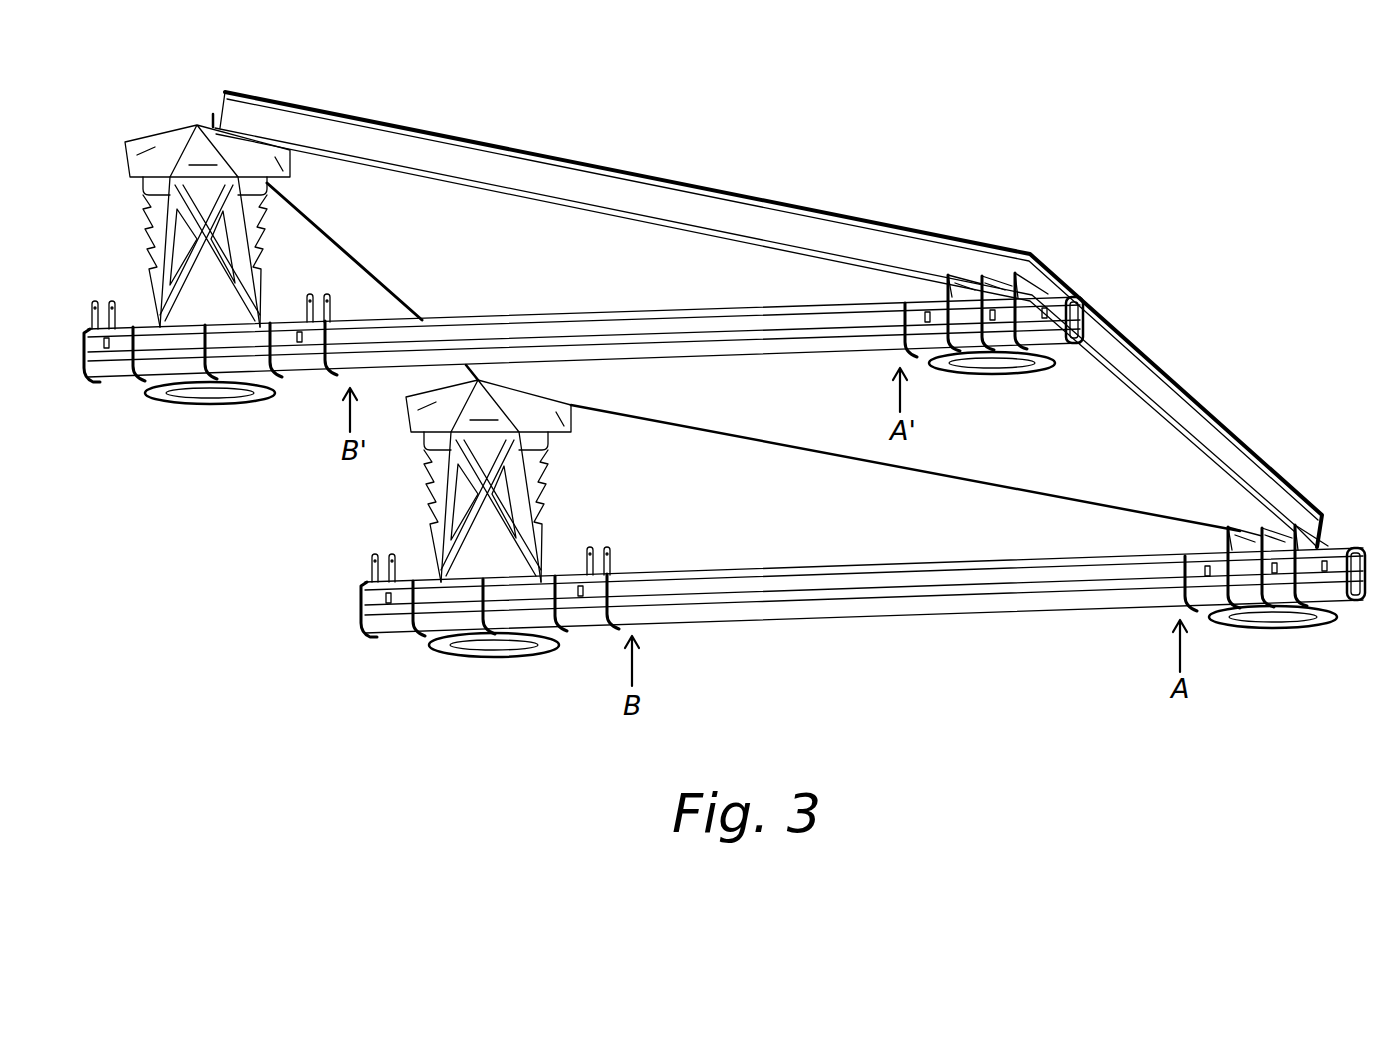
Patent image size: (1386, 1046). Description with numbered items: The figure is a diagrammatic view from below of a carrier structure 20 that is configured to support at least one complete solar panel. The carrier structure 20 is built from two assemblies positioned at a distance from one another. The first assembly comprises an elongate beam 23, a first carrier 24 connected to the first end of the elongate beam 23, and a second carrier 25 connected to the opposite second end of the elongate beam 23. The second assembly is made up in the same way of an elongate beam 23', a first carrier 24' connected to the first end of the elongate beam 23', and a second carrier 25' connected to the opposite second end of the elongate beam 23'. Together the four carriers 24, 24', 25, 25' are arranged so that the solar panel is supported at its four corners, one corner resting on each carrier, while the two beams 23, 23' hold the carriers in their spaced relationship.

The carrier structure 20 is at (1230, 268).
The elongate beam 23 is at (863, 618).
The elongate beam 23' is at (583, 323).
The first carrier 24 is at (1248, 538).
The first carrier 24' is at (998, 267).
The second carrier 25 is at (823, 473).
The second carrier 25' is at (247, 226).